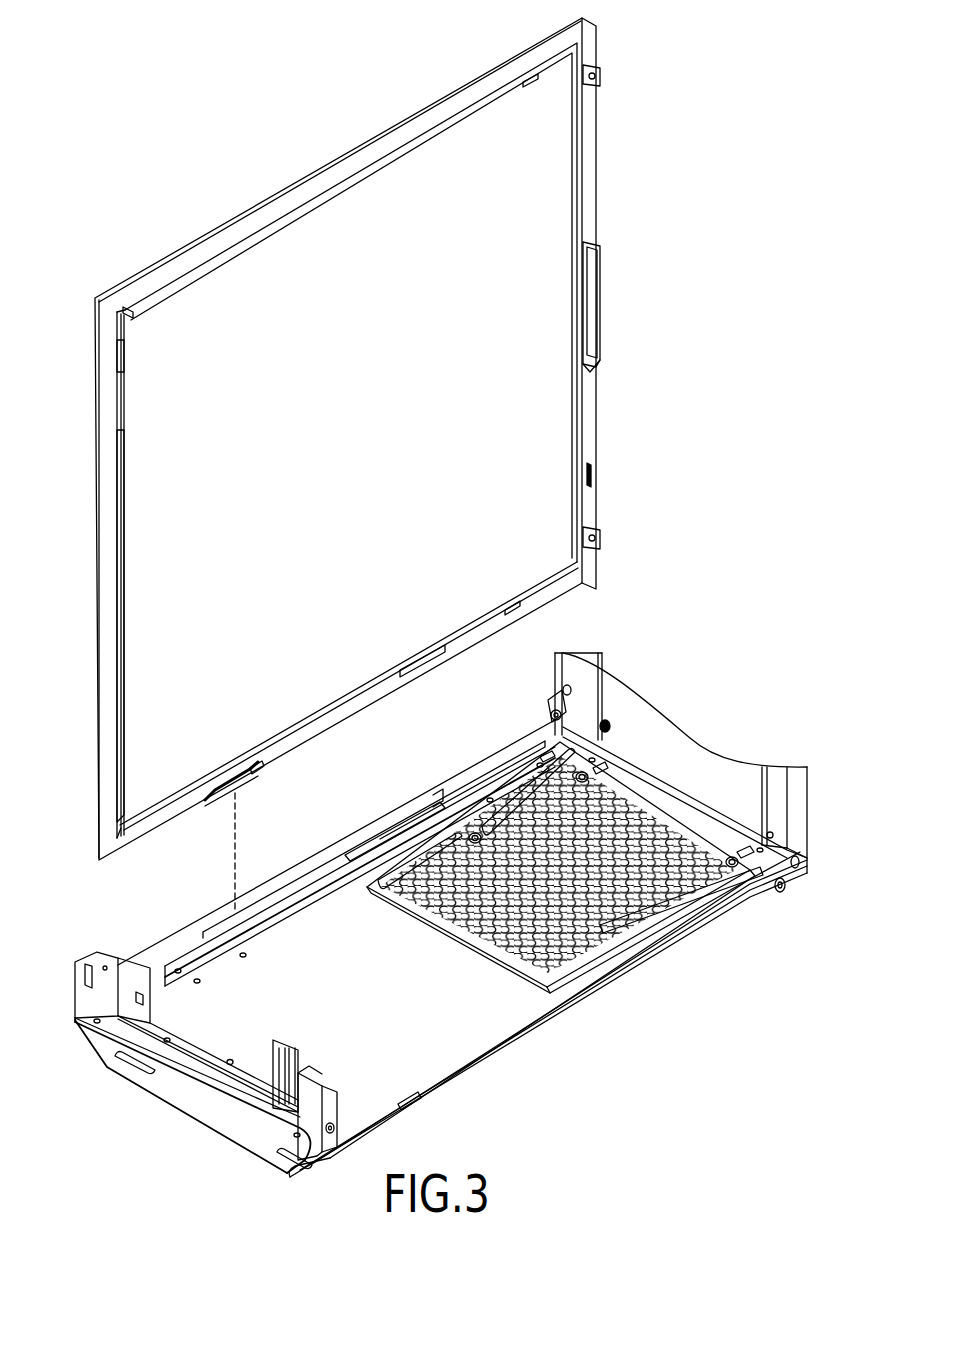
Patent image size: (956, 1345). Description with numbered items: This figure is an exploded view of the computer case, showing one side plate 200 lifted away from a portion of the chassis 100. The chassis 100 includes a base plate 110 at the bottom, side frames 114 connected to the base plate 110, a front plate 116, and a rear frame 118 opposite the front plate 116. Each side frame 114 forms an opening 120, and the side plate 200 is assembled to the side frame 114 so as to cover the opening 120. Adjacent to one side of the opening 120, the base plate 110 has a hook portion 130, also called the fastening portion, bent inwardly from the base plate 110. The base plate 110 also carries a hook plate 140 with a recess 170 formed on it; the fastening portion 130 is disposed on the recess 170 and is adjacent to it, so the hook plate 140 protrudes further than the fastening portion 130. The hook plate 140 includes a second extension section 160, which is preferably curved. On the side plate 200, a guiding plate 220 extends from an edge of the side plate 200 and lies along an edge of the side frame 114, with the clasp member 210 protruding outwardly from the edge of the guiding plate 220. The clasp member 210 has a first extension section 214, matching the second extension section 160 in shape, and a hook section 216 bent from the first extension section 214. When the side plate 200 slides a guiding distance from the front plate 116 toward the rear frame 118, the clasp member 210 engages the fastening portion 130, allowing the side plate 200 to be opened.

The chassis 100 is at (625, 981).
The base plate 110 is at (427, 1012).
The side frame 114 is at (498, 1045).
The front plate 116 is at (100, 993).
The rear frame 118 is at (578, 662).
The opening 120 is at (221, 989).
The hook portion (fastening portion) 130 is at (247, 903).
The hook plate 140 is at (433, 723).
The second extension section 160 is at (380, 828).
The recess 170 is at (463, 790).
The side plate 200 is at (301, 350).
The clasp member 210 is at (268, 668).
The first extension section 214 is at (223, 773).
The hook section 216 is at (252, 767).
The guiding plate 220 is at (403, 672).